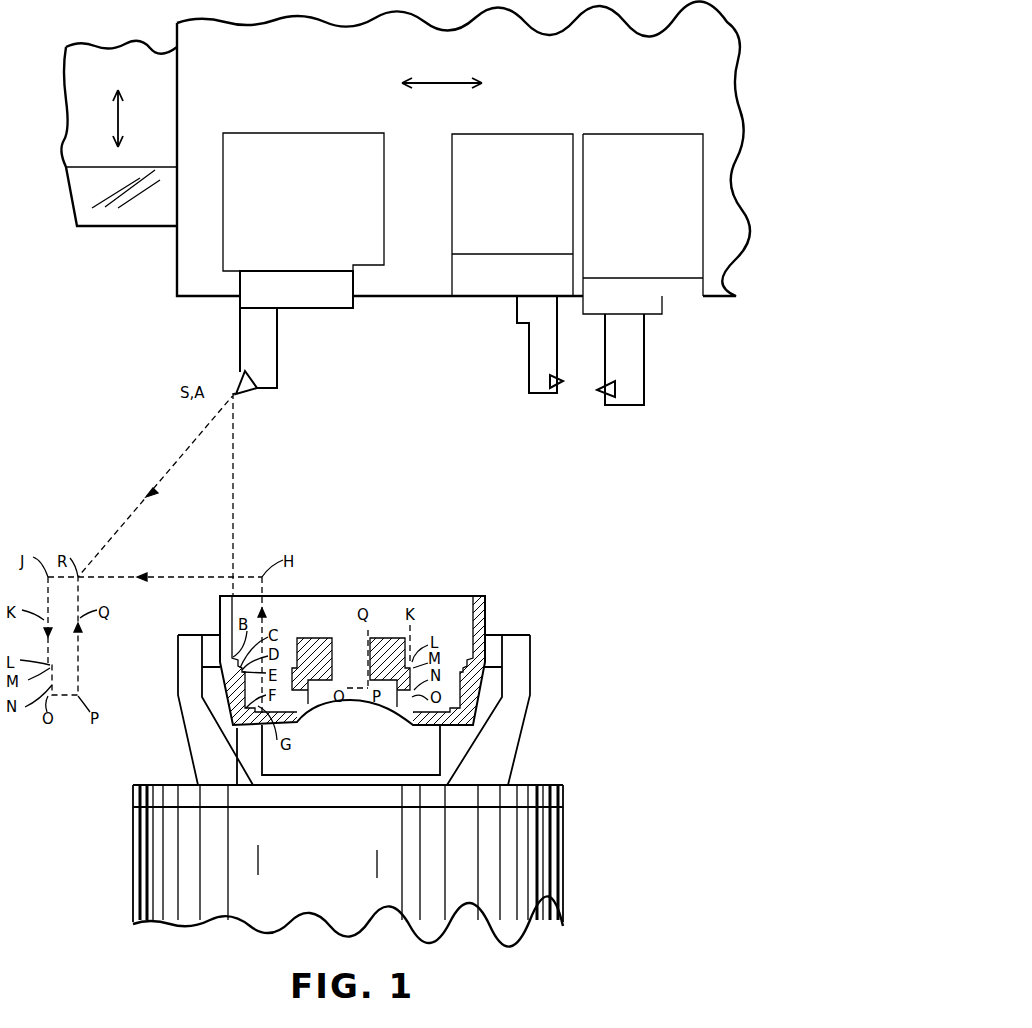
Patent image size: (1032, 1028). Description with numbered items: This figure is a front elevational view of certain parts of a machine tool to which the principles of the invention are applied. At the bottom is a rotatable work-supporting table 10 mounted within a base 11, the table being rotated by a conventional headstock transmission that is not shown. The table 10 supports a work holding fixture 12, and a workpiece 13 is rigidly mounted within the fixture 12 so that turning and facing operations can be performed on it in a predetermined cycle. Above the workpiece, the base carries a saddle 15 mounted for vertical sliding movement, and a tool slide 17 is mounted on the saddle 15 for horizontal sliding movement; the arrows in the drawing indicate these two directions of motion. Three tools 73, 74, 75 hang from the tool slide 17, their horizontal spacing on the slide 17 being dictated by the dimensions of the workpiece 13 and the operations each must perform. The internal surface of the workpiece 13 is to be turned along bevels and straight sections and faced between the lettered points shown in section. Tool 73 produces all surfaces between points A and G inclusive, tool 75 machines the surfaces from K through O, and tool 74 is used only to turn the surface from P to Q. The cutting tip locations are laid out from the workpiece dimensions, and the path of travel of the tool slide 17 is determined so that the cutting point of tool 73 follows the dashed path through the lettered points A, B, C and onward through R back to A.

The work-supporting table 10 is at (563, 792).
The base 11 is at (548, 885).
The work holding fixture 12 is at (510, 724).
The workpiece 13 is at (487, 600).
The saddle 15 is at (162, 125).
The tool slide 17 is at (557, 77).
The tool 73 is at (280, 348).
The tool 74 is at (533, 360).
The tool 75 is at (633, 368).